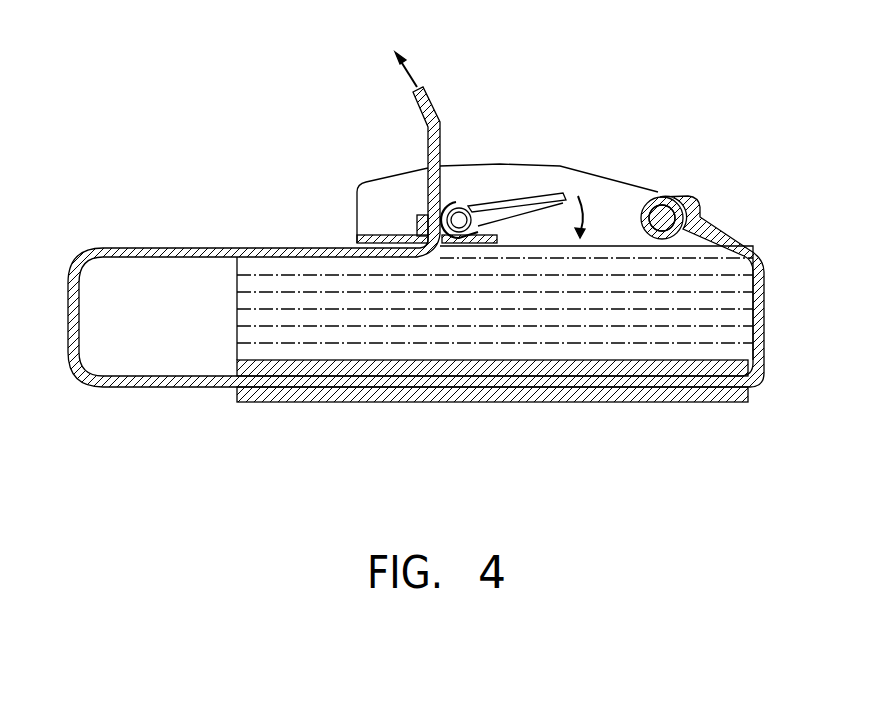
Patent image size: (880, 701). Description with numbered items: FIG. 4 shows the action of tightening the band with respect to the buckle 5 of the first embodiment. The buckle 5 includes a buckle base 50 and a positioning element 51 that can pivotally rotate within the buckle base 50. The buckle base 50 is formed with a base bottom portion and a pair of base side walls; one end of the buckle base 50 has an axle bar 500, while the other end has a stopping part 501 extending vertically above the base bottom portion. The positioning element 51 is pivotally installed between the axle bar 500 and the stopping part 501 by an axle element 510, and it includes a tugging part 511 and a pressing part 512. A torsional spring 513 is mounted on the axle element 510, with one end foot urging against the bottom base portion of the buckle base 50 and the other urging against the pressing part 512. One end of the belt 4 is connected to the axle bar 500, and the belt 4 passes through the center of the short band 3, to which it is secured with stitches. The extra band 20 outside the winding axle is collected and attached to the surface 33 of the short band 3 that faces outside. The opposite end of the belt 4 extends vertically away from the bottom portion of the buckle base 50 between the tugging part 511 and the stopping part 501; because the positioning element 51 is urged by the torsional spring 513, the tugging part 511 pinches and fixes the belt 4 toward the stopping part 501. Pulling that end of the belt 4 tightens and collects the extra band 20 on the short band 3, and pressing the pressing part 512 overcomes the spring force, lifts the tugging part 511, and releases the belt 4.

The short band 3 is at (608, 392).
The belt 4 is at (760, 290).
The buckle 5 is at (539, 131).
The extra band 20 is at (250, 298).
The surface 33 is at (480, 355).
The buckle base 50 is at (578, 182).
The positioning element 51 is at (498, 129).
The axle bar 500 is at (664, 212).
The stopping part 501 is at (408, 216).
The axle element 510 is at (458, 208).
The tugging part 511 is at (450, 204).
The pressing part 512 is at (527, 205).
The torsional spring 513 is at (500, 206).